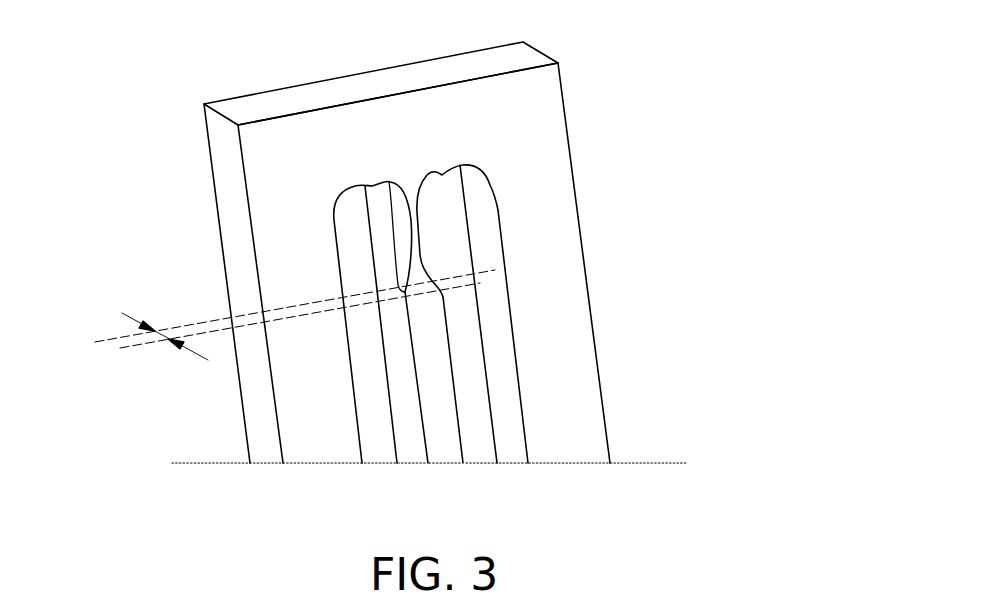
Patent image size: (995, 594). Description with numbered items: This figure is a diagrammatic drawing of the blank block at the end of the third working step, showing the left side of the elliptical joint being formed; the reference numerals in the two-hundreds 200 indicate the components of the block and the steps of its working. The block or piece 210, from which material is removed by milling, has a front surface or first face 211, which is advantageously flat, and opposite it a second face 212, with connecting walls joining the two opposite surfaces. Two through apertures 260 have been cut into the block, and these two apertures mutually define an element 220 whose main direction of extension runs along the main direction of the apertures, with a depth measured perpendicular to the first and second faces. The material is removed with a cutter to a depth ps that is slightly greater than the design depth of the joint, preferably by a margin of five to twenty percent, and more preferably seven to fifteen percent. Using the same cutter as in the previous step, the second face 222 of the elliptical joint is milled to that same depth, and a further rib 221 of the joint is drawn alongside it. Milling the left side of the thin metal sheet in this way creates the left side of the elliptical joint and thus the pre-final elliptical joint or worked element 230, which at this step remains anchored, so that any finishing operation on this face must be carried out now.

The components and working steps of the blank block 200 is at (568, 73).
The blank block 210 is at (230, 181).
The front surface 211 is at (542, 128).
The second face 212 is at (203, 122).
The element 220 is at (439, 407).
The second rib 221 is at (455, 336).
The second face of the elliptical joint 222 is at (400, 340).
The worked element 230 is at (425, 217).
The through apertures 260 is at (378, 433).
The depth ps is at (162, 334).